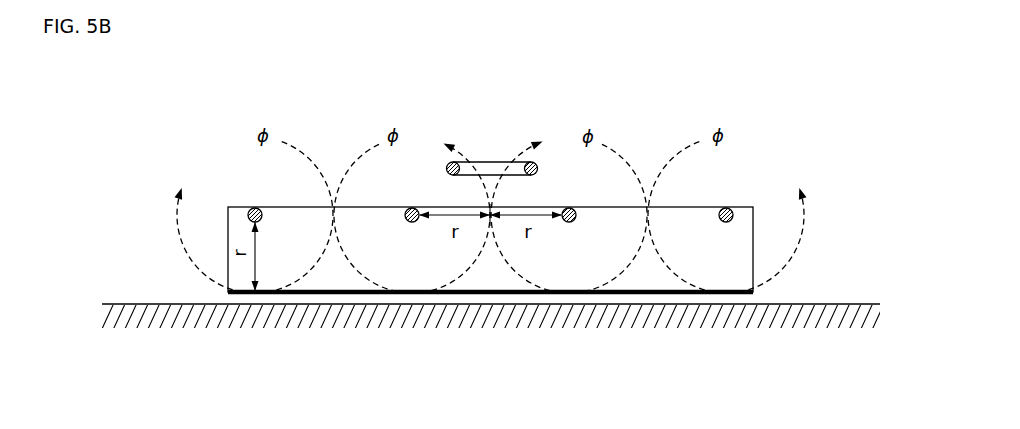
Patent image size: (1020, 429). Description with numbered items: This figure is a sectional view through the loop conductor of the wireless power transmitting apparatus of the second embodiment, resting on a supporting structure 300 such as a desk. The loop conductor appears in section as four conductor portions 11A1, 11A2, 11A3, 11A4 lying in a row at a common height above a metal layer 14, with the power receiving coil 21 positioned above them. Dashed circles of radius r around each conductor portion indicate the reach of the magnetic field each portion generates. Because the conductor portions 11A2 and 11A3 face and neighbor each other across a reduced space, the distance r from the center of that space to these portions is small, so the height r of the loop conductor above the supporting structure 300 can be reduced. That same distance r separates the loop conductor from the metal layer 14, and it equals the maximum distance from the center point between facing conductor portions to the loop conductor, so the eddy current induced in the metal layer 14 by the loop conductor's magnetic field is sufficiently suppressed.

The conductor portion 11A1 is at (252, 208).
The conductor portion 11A2 is at (410, 208).
The conductor portion 11A3 is at (571, 208).
The conductor portion 11A4 is at (730, 208).
The metal layer 14 is at (492, 294).
The power receiving coil 21 is at (497, 161).
The supporting structure 300 is at (840, 304).